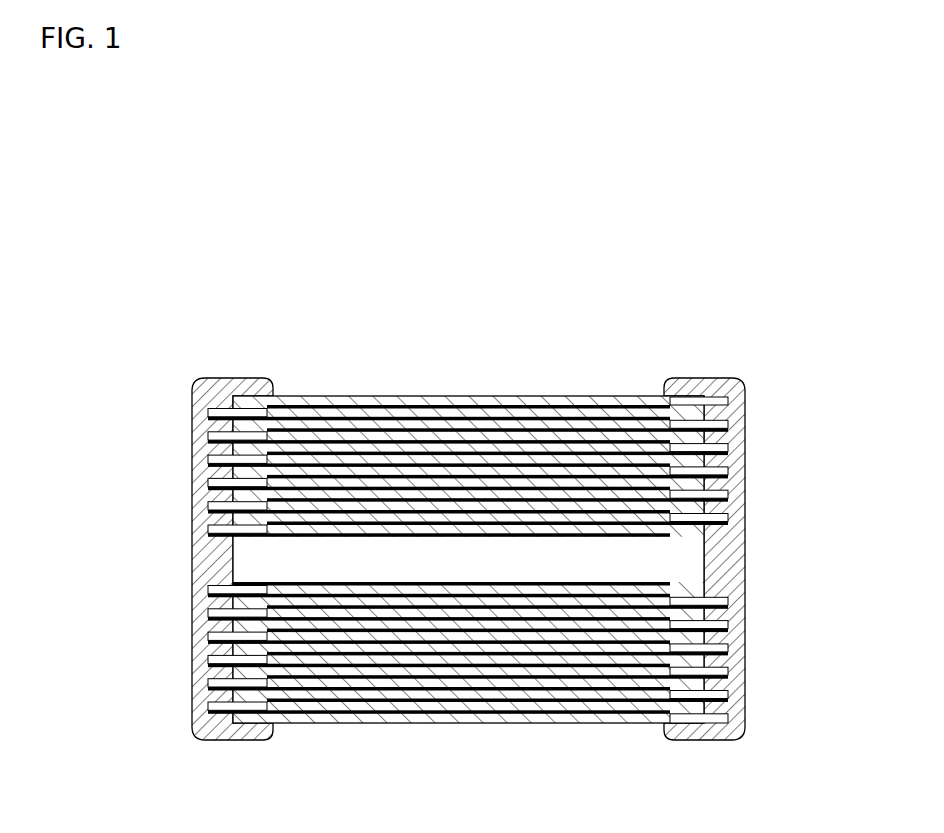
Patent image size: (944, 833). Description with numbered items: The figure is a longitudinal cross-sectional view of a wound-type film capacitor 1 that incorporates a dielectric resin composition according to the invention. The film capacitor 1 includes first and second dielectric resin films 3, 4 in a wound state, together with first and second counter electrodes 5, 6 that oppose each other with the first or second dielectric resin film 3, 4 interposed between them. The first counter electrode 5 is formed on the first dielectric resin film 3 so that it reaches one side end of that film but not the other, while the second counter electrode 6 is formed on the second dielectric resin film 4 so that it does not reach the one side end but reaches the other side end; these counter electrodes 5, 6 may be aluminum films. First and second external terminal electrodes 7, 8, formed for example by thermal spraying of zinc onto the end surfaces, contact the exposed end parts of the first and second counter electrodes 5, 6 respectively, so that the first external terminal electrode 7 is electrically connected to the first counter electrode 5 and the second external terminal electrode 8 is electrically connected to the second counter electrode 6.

The film capacitor 1 is at (224, 253).
The first dielectric resin film 3 is at (399, 437).
The second dielectric resin film 4 is at (488, 427).
The first counter electrode 5 is at (345, 443).
The second counter electrode 6 is at (563, 428).
The first external terminal electrode 7 is at (200, 393).
The second external terminal electrode 8 is at (737, 405).